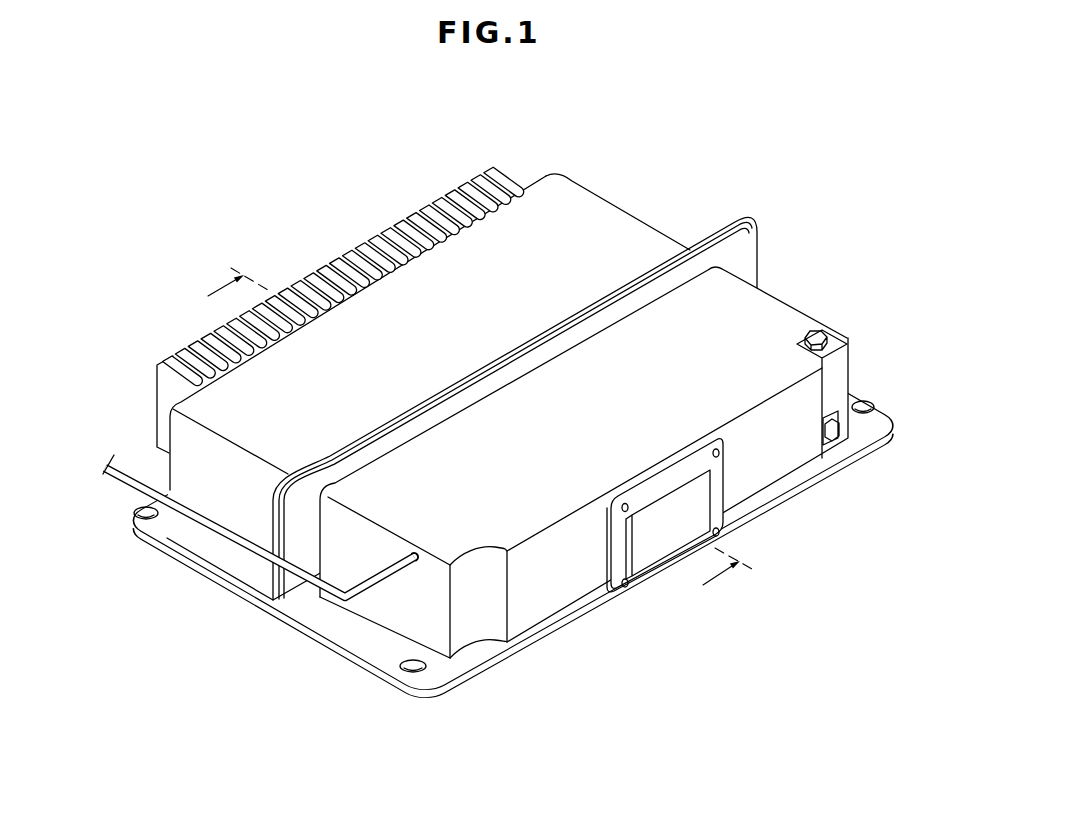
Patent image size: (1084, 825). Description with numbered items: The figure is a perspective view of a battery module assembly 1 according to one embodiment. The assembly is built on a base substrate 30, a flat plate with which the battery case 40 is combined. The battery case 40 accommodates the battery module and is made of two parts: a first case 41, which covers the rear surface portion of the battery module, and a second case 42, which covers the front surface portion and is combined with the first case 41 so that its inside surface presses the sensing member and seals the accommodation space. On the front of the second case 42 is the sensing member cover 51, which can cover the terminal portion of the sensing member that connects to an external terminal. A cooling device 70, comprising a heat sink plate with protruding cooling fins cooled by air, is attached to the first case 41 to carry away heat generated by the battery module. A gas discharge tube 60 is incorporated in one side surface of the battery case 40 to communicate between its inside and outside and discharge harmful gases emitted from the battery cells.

The battery module assembly 1 is at (140, 172).
The base substrate 30 is at (392, 652).
The battery case 40 is at (778, 162).
The first case 41 is at (657, 240).
The second case 42 is at (790, 310).
The sensing member cover 51 is at (642, 553).
The gas discharge tube 60 is at (228, 530).
The cooling device 70 is at (426, 192).